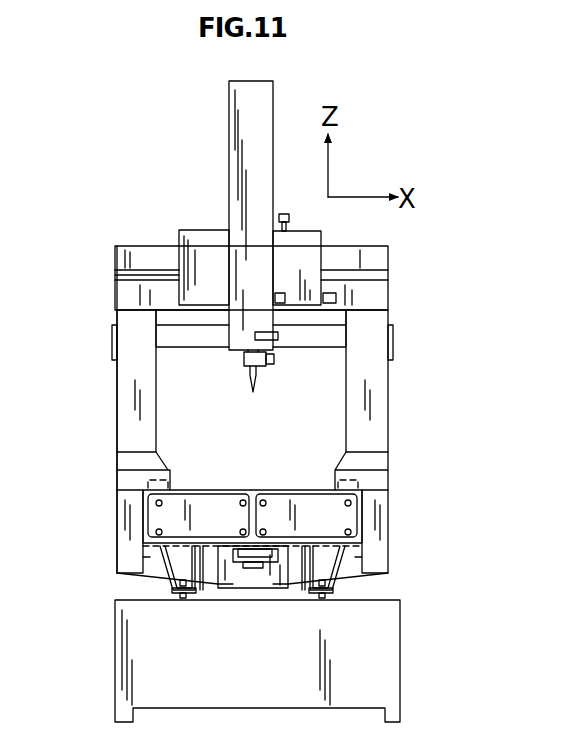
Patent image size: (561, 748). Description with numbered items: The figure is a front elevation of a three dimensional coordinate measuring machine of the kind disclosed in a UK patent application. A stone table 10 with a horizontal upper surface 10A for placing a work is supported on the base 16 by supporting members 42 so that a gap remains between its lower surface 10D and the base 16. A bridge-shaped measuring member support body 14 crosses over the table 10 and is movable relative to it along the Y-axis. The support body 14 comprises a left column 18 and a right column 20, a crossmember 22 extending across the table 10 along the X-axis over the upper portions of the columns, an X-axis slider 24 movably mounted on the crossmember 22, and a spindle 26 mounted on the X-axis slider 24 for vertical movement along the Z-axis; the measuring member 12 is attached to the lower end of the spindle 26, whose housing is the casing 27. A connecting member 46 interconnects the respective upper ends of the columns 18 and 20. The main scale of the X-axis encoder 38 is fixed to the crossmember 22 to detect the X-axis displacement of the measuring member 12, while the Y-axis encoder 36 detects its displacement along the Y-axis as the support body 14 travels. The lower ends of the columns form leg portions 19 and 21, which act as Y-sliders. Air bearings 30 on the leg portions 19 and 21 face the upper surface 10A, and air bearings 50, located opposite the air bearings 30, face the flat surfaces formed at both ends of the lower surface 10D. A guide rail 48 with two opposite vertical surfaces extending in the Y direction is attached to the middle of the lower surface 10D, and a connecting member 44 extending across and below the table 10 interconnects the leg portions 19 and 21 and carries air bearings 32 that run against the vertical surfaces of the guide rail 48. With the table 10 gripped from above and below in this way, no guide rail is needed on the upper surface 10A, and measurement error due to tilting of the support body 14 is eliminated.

The table 10 is at (210, 494).
The upper surface 10A is at (268, 494).
The lower surface 10D is at (350, 598).
The measuring member 12 is at (252, 382).
The measuring member support body 14 is at (140, 421).
The base 16 is at (278, 696).
The left column 18 is at (130, 364).
The leg portion 19 is at (121, 508).
The right column 20 is at (375, 412).
The leg portion 21 is at (388, 513).
The crossmember 22 is at (375, 262).
The X-axis slider 24 is at (303, 240).
The spindle 26 is at (245, 355).
The casing 27 is at (233, 172).
The air bearings 30 is at (172, 476).
The air bearings 32 is at (212, 582).
The Y-axis encoder 36 is at (240, 565).
The X-axis encoder 38 is at (120, 276).
The supporting members 42 is at (160, 568).
The connecting member 44 is at (282, 575).
The connecting member 46 is at (318, 340).
The guide rail 48 is at (230, 584).
The air bearings 50 is at (150, 557).